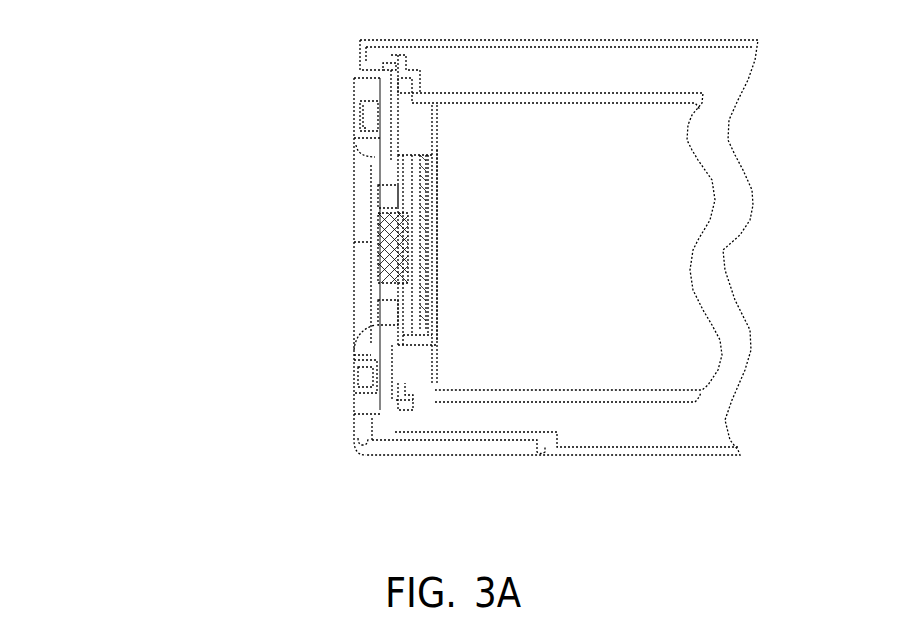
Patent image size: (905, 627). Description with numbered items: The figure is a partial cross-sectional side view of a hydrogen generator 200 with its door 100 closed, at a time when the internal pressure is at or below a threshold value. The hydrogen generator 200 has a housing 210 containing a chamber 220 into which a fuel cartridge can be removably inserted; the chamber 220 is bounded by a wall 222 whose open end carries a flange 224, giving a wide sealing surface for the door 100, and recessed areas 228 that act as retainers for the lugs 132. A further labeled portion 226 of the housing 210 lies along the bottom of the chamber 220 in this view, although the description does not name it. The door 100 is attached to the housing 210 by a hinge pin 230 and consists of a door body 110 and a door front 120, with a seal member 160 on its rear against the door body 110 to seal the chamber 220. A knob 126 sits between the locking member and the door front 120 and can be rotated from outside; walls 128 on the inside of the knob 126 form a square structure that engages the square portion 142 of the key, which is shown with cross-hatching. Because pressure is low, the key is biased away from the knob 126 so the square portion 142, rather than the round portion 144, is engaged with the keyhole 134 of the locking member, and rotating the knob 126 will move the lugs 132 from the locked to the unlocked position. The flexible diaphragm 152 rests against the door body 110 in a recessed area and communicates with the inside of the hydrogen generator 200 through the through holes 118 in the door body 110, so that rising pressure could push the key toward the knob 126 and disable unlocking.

The hydrogen generator 200 is at (198, 42).
The door 100 is at (343, 373).
The door body 110 is at (435, 168).
The through holes 118 is at (437, 213).
The door front 120 is at (352, 122).
The knob 126 is at (352, 247).
The walls 128 is at (395, 208).
The lugs 132 is at (381, 63).
The keyhole 134 is at (403, 258).
The square portion 142 is at (400, 268).
The round portion 144 is at (413, 242).
The flexible diaphragm 152 is at (430, 313).
The seal member 160 is at (408, 100).
The housing 210 is at (699, 453).
The chamber 220 is at (660, 277).
The wall 222 is at (517, 395).
The flange 224 is at (417, 410).
The wall layer 226 is at (595, 430).
The recessed areas 228 is at (362, 70).
The hinge pin 230 is at (361, 450).